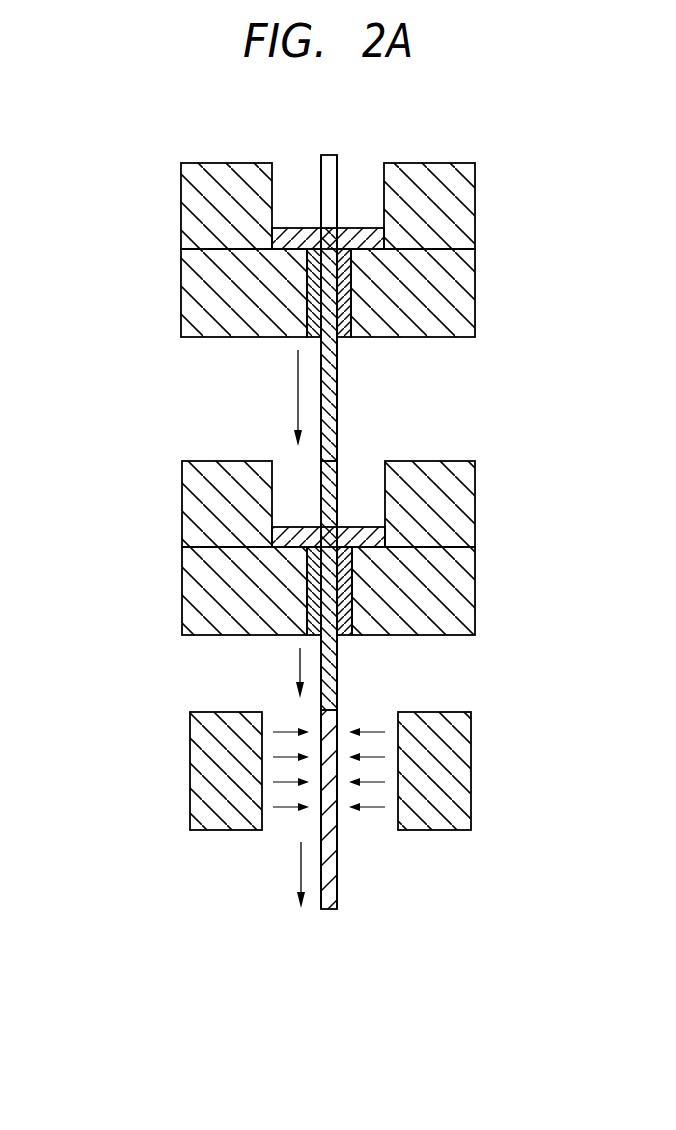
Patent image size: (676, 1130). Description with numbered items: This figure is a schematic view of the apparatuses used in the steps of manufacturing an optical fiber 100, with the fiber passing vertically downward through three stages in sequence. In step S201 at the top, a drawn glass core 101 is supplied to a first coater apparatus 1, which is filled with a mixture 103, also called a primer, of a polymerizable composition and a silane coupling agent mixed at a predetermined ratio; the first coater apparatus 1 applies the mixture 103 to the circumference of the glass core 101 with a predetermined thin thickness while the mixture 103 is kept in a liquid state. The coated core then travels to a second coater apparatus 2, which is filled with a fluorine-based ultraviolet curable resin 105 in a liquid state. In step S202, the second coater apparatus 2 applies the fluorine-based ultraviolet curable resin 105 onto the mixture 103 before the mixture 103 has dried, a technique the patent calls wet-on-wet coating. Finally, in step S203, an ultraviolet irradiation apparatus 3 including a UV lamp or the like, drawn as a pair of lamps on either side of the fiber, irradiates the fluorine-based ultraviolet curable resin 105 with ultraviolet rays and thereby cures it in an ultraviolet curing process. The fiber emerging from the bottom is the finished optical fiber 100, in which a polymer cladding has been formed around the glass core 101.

The first coater apparatus 1 is at (463, 275).
The second coater apparatus 2 is at (463, 582).
The ultraviolet irradiation apparatus 3 is at (465, 752).
The optical fiber 100 is at (330, 909).
The glass core 101 is at (328, 155).
The mixture 103 is at (342, 337).
The fluorine-based ultraviolet curable resin 105 is at (343, 635).
The step S201 is at (157, 253).
The step S202 is at (157, 548).
The step S203 is at (157, 767).